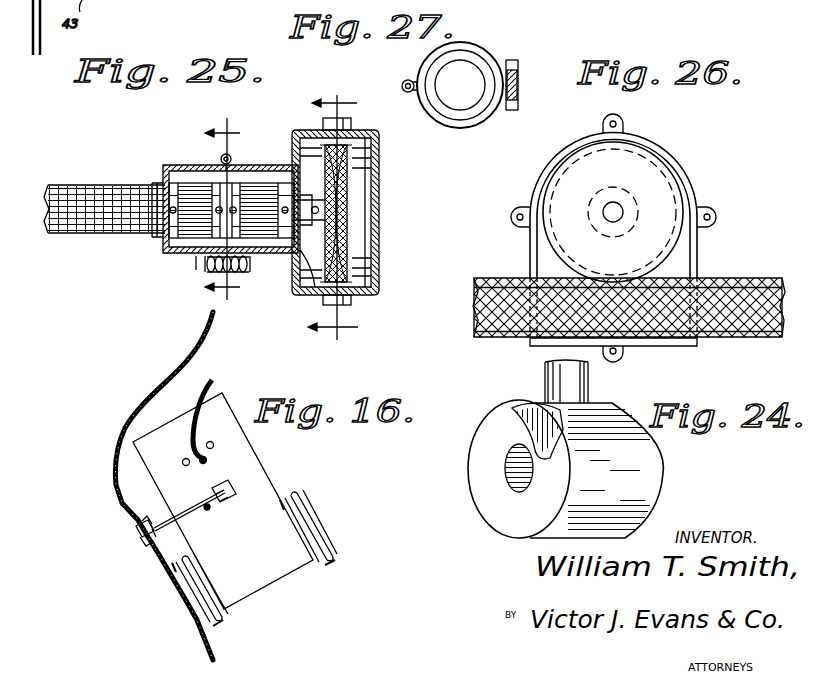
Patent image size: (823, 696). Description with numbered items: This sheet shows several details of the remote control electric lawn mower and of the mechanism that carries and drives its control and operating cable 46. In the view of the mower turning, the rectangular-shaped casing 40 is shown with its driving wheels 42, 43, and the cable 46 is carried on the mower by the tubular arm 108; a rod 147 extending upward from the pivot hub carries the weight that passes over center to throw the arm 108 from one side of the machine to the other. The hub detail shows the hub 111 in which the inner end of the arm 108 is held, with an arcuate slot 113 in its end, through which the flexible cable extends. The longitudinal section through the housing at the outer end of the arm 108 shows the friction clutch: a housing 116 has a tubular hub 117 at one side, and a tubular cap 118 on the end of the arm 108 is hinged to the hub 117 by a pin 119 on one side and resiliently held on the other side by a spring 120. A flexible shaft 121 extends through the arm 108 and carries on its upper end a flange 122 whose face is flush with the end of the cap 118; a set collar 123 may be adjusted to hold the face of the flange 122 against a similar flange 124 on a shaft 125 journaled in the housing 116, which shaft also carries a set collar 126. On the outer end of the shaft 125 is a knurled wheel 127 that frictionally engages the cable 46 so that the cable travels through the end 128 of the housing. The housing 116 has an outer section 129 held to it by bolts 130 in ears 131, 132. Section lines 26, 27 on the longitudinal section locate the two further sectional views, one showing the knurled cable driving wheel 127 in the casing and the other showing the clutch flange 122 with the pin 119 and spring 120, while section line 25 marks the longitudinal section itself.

In FIG. 25, the arm 108 is at (100, 185).
In FIG. 16, the arm 108 is at (202, 503).
In FIG. 24, the arm 108 is at (590, 380).
In FIG. 25, the flexible shaft 121 is at (82, 222).
In FIG. 25, the tubular cap 118 is at (165, 164).
In FIG. 25, the set collar 123 is at (166, 240).
In FIG. 25, the pin 119 is at (221, 157).
In FIG. 27, the pin 119 is at (517, 60).
In FIG. 25, the flange 124 is at (234, 183).
In FIG. 25, the tubular hub 117 is at (276, 183).
In FIG. 25, the flange 122 is at (205, 260).
In FIG. 27, the flange 122 is at (448, 75).
In FIG. 25, the spring 120 is at (197, 272).
In FIG. 27, the spring 120 is at (407, 93).
In FIG. 25, the section line 27— 27 is at (232, 209).
In FIG. 25, the shaft 125 is at (265, 215).
In FIG. 26, the shaft 125 is at (611, 211).
In FIG. 25, the housing 116 is at (305, 130).
In FIG. 26, the housing 116 is at (545, 168).
In FIG. 16, the housing 116 is at (137, 534).
In FIG. 25, the bolts 130 is at (352, 299).
In FIG. 26, the bolts 130 is at (624, 125).
In FIG. 25, the ear 132 is at (338, 306).
In FIG. 25, the knurled wheel 127 is at (350, 240).
In FIG. 26, the knurled wheel 127 is at (662, 186).
In FIG. 25, the outer section 129 is at (375, 182).
In FIG. 25, the set collar 126 is at (305, 292).
In FIG. 25, the end of the housing 128 is at (288, 296).
In FIG. 26, the end of the housing 128 is at (530, 262).
In FIG. 25, the ear 131 is at (330, 322).
In FIG. 26, the ear 131 is at (716, 215).
In FIG. 25, the section line 26— 26 is at (342, 217).
In FIG. 26, the section line 25— 25 is at (580, 110).
In FIG. 26, the control and operating cable 46 is at (745, 290).
In FIG. 16, the control and operating cable 46 is at (193, 398).
In FIG. 16, the casing 40 is at (258, 476).
In FIG. 16, the driving wheel 42 is at (318, 524).
In FIG. 16, the driving wheel 43 is at (214, 615).
In FIG. 16, the rod 147 is at (207, 510).
In FIG. 24, the hub 111 is at (660, 478).
In FIG. 24, the arcuate slot 113 is at (516, 410).